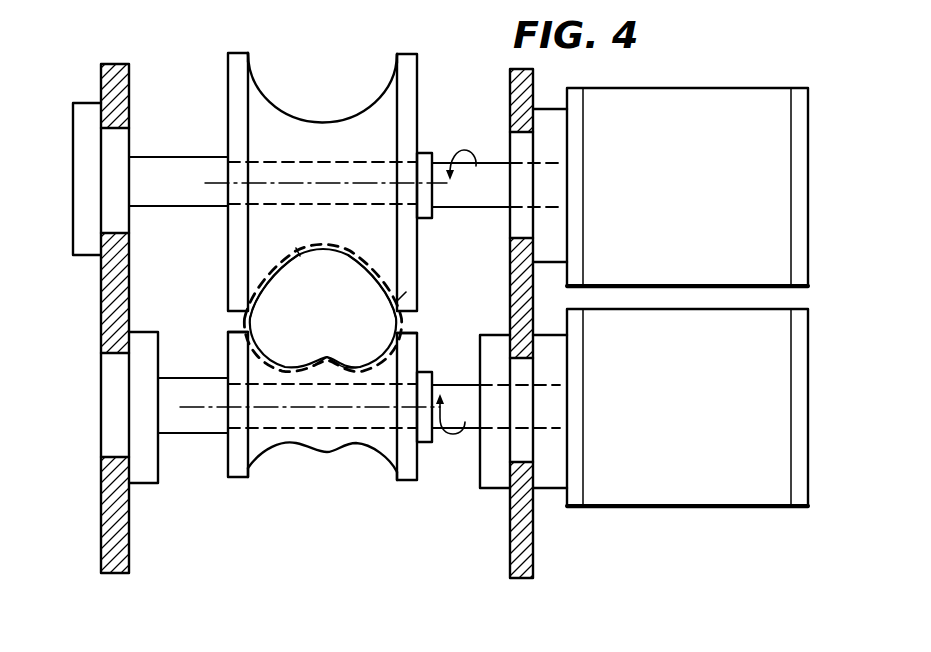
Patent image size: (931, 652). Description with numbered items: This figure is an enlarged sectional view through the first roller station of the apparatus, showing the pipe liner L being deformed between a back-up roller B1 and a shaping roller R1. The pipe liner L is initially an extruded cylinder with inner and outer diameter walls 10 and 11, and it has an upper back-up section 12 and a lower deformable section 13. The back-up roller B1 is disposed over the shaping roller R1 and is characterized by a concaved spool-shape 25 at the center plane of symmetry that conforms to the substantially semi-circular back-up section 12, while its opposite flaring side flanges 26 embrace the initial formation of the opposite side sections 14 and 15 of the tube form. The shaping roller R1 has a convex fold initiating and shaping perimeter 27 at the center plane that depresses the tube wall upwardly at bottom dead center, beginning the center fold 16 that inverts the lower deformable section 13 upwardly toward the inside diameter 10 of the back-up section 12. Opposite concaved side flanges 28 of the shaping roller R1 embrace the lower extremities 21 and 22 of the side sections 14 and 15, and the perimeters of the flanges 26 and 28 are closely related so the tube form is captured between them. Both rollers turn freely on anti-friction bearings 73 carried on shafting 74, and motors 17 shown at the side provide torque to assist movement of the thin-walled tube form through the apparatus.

The inner diameter wall 10 is at (323, 309).
The outer diameter wall 11 is at (355, 255).
The upper back-up section 12 is at (297, 250).
The lower deformable section 13 is at (303, 374).
The side section 14 is at (262, 282).
The side section 15 is at (404, 302).
The center fold 16 is at (330, 370).
The motor 17 is at (686, 196).
The lower extremity of side section 21 is at (242, 345).
The lower extremity of side section 22 is at (400, 345).
The concaved spool-shape 25 is at (305, 112).
The roller flange 26 is at (257, 74).
The convex fold initiating and shaping perimeter 27 is at (324, 450).
The concaved side flange 28 is at (258, 465).
The bearing 73 is at (73, 219).
The shafting 74 is at (190, 162).
The back-up roller B1 is at (299, 171).
The shaping roller R1 is at (315, 431).
The pipe liner L is at (401, 276).